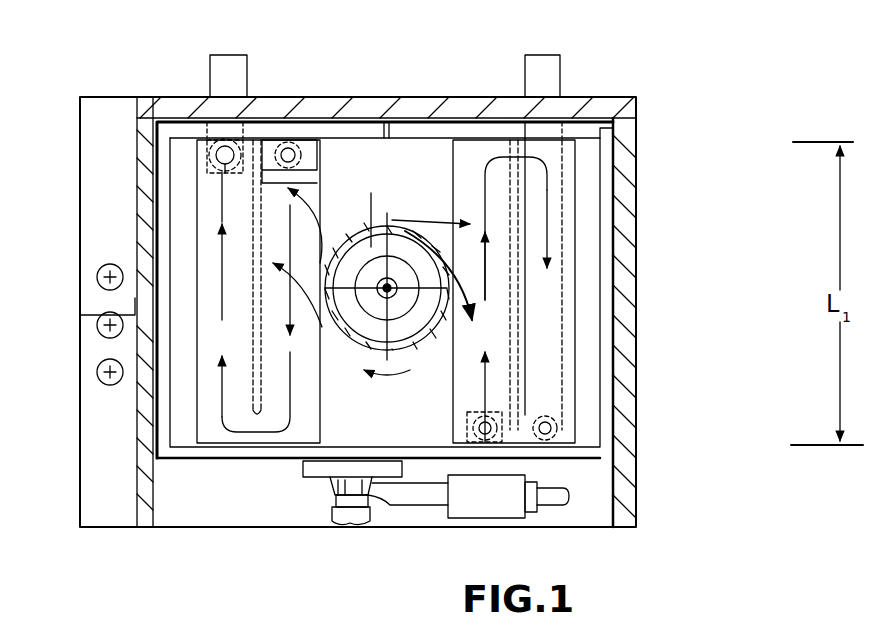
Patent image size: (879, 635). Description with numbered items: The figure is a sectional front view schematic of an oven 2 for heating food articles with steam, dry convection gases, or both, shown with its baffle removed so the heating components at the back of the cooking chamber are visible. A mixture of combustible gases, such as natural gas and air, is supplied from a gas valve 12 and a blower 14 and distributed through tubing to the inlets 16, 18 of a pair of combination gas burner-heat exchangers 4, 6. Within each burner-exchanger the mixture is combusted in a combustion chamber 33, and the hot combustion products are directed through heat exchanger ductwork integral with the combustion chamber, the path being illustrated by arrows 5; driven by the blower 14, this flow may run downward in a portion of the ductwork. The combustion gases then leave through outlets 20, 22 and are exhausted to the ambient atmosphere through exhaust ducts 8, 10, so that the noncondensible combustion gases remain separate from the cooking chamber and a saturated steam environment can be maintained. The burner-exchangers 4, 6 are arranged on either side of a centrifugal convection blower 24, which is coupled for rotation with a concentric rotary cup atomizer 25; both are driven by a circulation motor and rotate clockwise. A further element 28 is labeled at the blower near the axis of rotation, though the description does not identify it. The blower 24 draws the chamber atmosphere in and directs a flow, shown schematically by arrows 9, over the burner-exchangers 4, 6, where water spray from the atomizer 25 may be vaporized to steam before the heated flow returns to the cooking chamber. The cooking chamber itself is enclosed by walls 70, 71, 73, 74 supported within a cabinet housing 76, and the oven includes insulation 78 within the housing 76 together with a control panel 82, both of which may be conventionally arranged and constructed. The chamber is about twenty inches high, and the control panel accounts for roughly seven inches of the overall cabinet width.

The oven 2 is at (680, 232).
The combination gas burner-heat exchanger 4 is at (575, 312).
The arrows 5 is at (217, 270).
The combination gas burner-heat exchanger 6 is at (197, 196).
The exhaust duct 8 is at (560, 75).
The arrows 9 is at (370, 257).
The exhaust duct 10 is at (213, 58).
The gas valve 12 is at (507, 512).
The blower 14 is at (327, 485).
The inlet 16 is at (467, 428).
The inlet 18 is at (317, 151).
The outlet 20 is at (536, 417).
The outlet 22 is at (228, 173).
The centrifugal convection blower 24 is at (409, 228).
The rotary cup atomizer 25 is at (414, 308).
The drum axle 28 is at (378, 190).
The combustion chamber 33 is at (318, 183).
The wall 70 is at (612, 297).
The wall 71 is at (414, 140).
The wall 73 is at (350, 460).
The wall 74 is at (160, 298).
The cabinet housing 76 is at (636, 353).
The insulation 78 is at (388, 120).
The control panel 82 is at (98, 373).